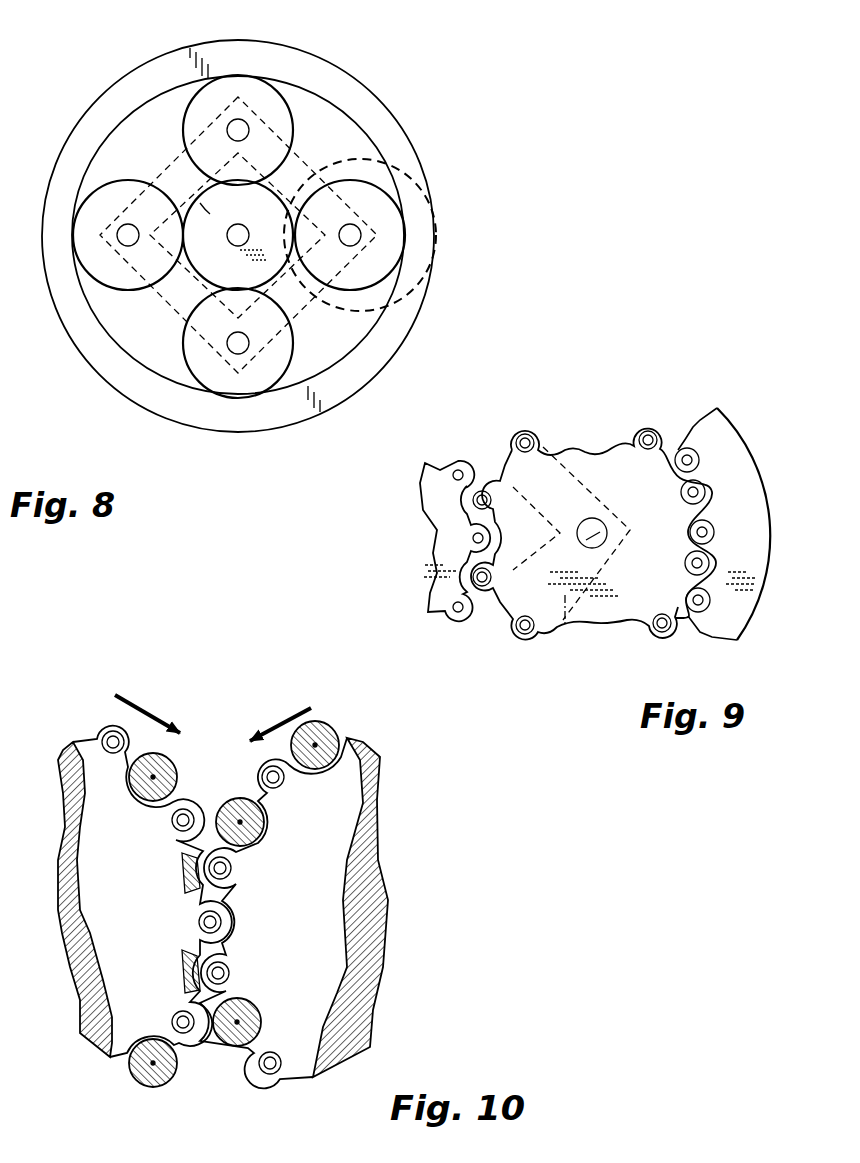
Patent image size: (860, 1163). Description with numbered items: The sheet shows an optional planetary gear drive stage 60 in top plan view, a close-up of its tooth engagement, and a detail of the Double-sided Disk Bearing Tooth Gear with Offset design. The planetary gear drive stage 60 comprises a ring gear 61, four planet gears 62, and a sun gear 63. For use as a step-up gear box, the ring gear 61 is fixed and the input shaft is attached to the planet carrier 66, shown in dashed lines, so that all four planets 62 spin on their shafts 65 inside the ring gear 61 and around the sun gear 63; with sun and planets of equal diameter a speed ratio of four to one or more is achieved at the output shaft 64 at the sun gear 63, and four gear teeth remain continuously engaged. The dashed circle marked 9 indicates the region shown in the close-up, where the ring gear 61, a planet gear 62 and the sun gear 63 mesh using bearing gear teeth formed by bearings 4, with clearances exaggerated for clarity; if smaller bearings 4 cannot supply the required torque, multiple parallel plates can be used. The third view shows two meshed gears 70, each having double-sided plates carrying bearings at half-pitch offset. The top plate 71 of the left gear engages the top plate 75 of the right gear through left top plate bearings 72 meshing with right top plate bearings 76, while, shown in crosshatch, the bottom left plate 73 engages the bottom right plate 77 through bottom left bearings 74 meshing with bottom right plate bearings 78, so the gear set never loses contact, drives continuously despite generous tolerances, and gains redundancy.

In FIG. 8, the planetary gear drive stage 60 is at (92, 82).
In FIG. 9, the planetary gear drive stage 60 is at (703, 355).
In FIG. 8, the ring gear 61 is at (113, 366).
In FIG. 9, the ring gear 61 is at (731, 437).
In FIG. 8, the planet gears 62 is at (228, 92).
In FIG. 9, the planet gears 62 is at (586, 452).
In FIG. 8, the sun gear 63 is at (205, 220).
In FIG. 9, the sun gear 63 is at (440, 527).
In FIG. 8, the output shaft 64 is at (247, 212).
In FIG. 8, the shafts 65 is at (247, 126).
In FIG. 9, the shafts 65 is at (607, 520).
In FIG. 8, the carrier 66 is at (177, 298).
In FIG. 9, the carrier 66 is at (563, 625).
In FIG. 8, the section line of FIG. 9 is at (432, 278).
In FIG. 9, the bearings 4 is at (455, 465).
In FIG. 10, the meshed gears 70 is at (139, 666).
In FIG. 10, the top plate 71 is at (110, 1058).
In FIG. 10, the left top plate bearings 72 is at (105, 740).
In FIG. 10, the bottom left plate 73 is at (110, 1035).
In FIG. 10, the bottom left bearings 74 is at (178, 768).
In FIG. 10, the top plate 75 is at (368, 752).
In FIG. 10, the right top plate bearings 76 is at (262, 775).
In FIG. 10, the bottom right plate 77 is at (388, 784).
In FIG. 10, the bottom right plate bearings 78 is at (322, 725).